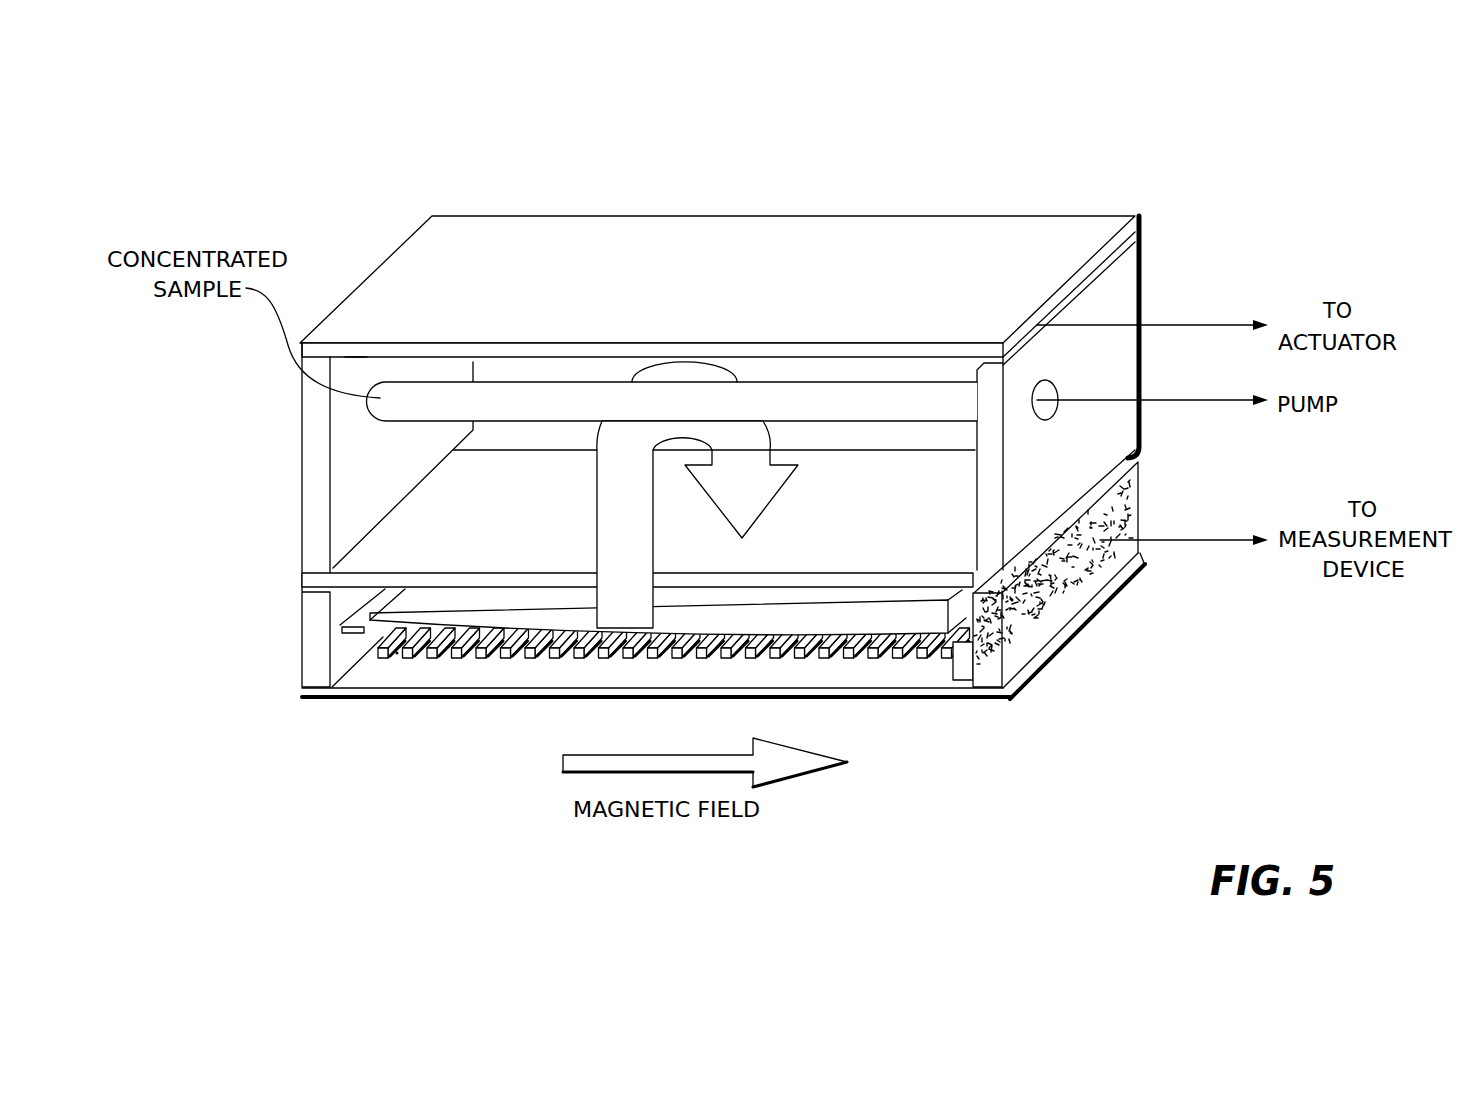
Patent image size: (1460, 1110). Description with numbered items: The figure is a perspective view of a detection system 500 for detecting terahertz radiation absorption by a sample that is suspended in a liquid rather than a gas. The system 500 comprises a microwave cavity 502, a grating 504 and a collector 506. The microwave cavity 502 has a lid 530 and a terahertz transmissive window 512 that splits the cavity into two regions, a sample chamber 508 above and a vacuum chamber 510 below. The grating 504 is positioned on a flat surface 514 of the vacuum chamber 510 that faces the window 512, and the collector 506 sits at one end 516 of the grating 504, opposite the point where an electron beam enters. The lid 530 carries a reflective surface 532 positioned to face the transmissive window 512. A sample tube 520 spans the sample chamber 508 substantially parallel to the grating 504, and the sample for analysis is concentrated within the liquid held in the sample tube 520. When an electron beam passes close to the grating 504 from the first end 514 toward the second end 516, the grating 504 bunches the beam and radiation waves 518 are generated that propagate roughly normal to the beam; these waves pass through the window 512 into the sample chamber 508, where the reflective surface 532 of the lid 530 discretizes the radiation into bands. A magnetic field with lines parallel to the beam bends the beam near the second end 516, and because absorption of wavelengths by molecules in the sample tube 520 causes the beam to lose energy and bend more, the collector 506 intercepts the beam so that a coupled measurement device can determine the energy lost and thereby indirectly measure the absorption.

The detection system 500 is at (298, 126).
The microwave cavity 502 is at (1141, 262).
The grating 504 is at (503, 660).
The collector 506 is at (1035, 600).
The sample chamber 508 is at (385, 483).
The vacuum chamber 510 is at (345, 624).
The terahertz transmissive window 512 is at (430, 580).
The flat surface 514 is at (368, 678).
The second end 516 is at (986, 716).
The radiation waves 518 is at (620, 598).
The sample tube 520 is at (851, 366).
The lid 530 is at (536, 237).
The reflective surface 532 is at (362, 363).